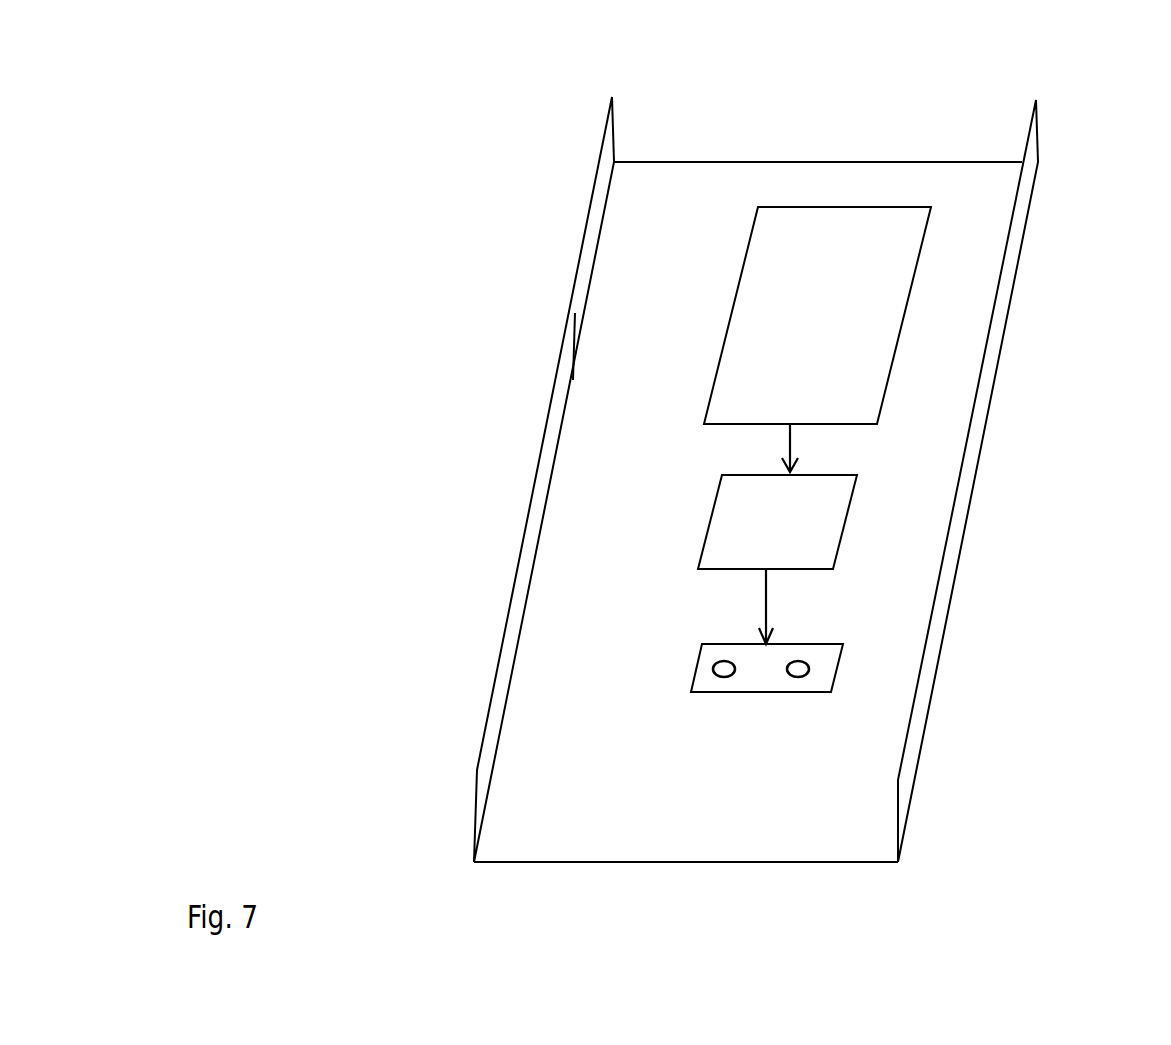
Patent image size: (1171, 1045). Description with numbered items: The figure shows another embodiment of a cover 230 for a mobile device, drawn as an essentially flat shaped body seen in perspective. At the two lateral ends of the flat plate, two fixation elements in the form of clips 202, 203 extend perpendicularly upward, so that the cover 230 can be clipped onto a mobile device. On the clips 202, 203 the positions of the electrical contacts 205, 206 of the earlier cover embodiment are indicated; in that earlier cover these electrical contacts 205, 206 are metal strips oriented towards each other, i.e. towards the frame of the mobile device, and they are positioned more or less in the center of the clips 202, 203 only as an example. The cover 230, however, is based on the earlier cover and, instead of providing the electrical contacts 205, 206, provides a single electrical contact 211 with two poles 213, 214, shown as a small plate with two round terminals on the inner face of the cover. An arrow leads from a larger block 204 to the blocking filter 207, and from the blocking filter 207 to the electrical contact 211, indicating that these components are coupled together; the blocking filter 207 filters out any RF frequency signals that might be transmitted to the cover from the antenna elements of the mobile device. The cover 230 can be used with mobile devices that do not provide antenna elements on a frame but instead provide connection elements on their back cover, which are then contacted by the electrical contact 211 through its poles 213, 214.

The clip 202 is at (1040, 163).
The clip 203 is at (603, 153).
The energy storage unit 204 is at (795, 213).
The electrical contact 205 is at (560, 372).
The electrical contact 206 is at (990, 380).
The blocking filter 207 is at (730, 475).
The electrical contact 211 is at (707, 678).
The pole 213 is at (733, 674).
The pole 214 is at (810, 672).
The cover 230 is at (973, 175).